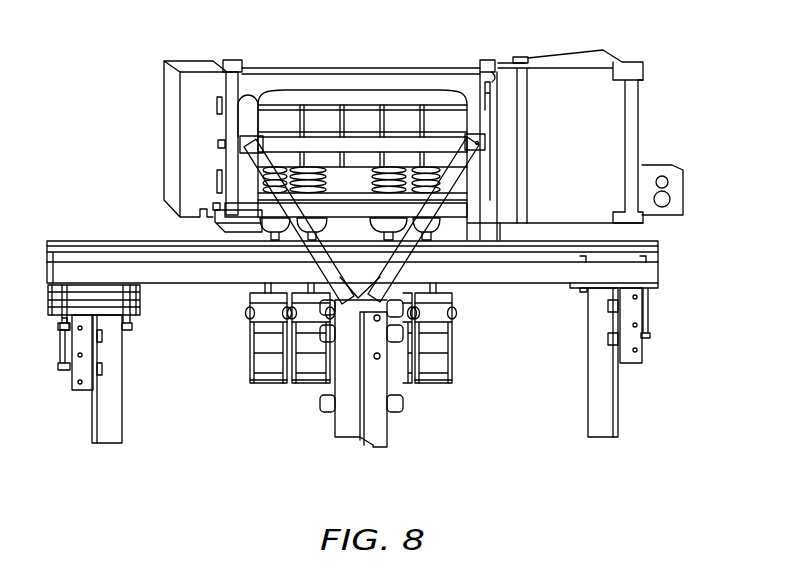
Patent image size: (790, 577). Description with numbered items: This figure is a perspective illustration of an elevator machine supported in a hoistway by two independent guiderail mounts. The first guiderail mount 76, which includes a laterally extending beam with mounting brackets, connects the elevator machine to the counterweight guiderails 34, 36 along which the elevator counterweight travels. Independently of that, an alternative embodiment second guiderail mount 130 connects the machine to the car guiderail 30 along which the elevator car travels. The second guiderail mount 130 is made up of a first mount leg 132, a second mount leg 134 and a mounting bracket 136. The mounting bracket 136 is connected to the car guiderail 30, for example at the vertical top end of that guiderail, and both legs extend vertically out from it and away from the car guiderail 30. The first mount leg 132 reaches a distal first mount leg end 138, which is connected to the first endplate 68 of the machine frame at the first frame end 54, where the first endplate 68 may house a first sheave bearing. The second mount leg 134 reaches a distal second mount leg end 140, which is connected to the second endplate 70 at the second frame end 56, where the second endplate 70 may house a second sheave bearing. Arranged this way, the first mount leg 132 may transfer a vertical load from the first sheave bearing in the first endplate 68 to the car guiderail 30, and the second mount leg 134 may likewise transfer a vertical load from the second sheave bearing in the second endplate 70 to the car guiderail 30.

The car guiderail 30 is at (392, 422).
The counterweight guiderail 34 is at (123, 420).
The counterweight guiderail 36 is at (620, 417).
The first frame end 54 is at (223, 90).
The second frame end 56 is at (525, 57).
The first endplate 68 is at (238, 84).
The second endplate 70 is at (489, 60).
The first guiderail mount 76 is at (660, 271).
The second guiderail mount 130 is at (248, 167).
The first mount leg 132 is at (213, 205).
The second mount leg 134 is at (465, 183).
The mounting bracket 136 is at (345, 358).
The distal first mount leg end 138 is at (243, 137).
The distal second mount leg end 140 is at (497, 140).